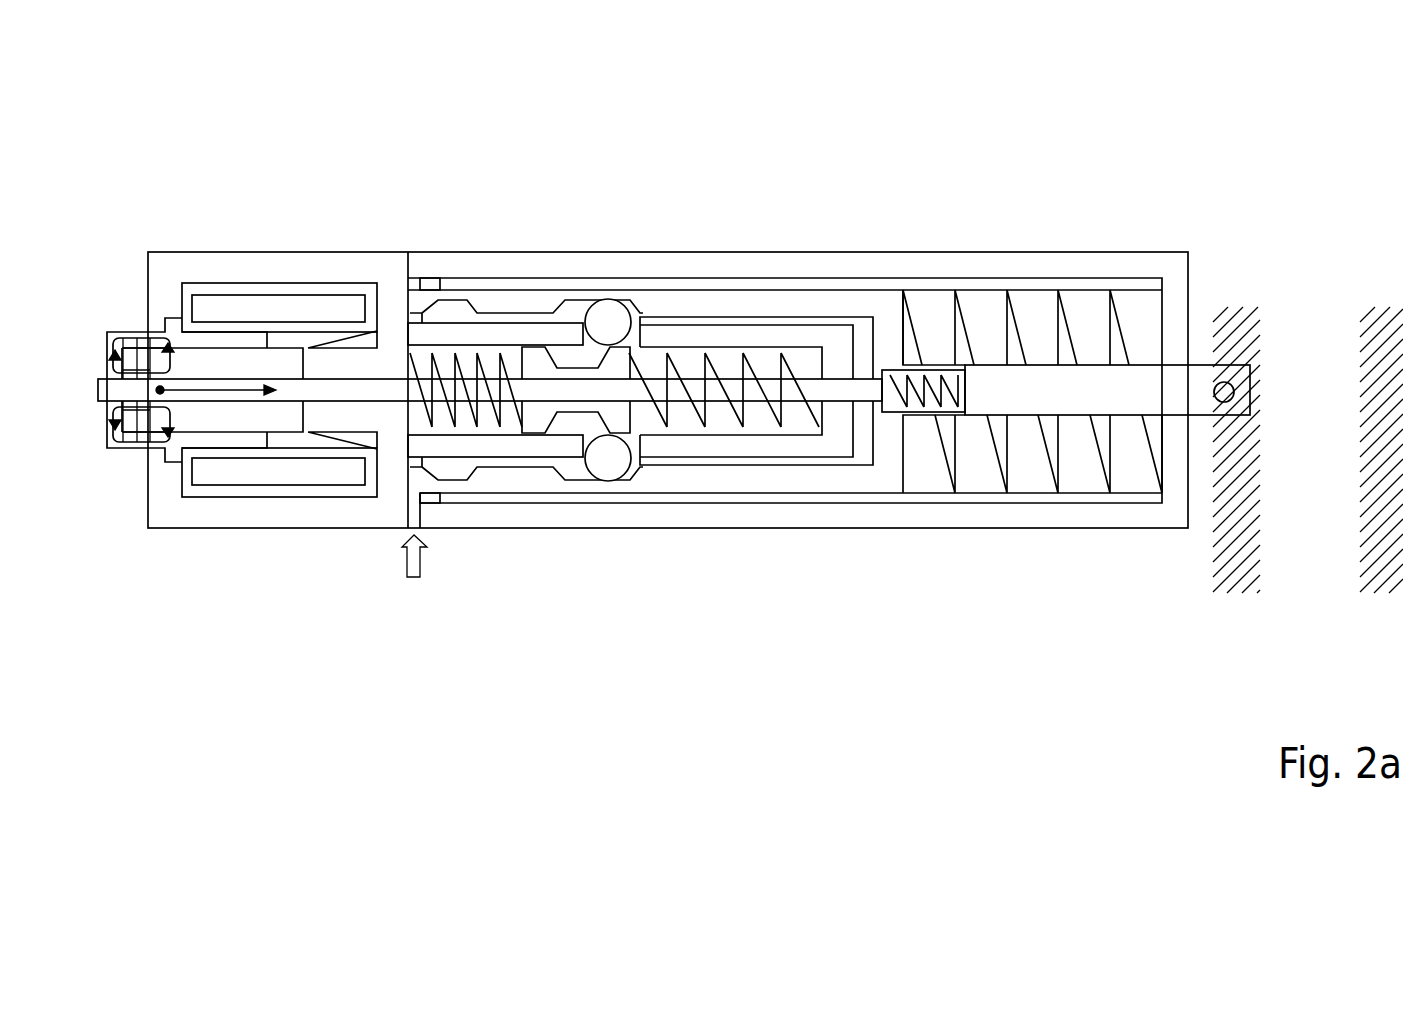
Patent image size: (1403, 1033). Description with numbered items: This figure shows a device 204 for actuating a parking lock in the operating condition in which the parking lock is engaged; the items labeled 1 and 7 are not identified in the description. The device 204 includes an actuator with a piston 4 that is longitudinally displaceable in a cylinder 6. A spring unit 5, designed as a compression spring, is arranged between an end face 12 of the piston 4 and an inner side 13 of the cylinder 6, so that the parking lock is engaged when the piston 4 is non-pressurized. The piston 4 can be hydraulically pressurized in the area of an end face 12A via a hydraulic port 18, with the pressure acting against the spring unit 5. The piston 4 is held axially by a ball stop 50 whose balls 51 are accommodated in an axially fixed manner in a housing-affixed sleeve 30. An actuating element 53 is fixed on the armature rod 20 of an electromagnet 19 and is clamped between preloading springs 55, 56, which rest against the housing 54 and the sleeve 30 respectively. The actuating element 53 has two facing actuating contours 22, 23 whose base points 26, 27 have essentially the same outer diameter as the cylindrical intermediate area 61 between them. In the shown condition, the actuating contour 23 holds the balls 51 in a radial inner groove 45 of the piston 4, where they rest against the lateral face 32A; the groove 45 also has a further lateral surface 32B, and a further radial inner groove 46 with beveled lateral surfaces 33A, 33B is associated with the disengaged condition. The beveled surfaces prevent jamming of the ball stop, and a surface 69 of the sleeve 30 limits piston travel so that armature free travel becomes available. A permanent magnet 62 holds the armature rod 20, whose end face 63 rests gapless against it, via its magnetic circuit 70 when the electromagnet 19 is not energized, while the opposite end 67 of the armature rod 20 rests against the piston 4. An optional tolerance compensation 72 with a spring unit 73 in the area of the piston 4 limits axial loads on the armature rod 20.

The valve 1 is at (807, 214).
The piston 4 is at (887, 307).
The spring unit 5 is at (1067, 325).
The cylinder 6 is at (977, 265).
The actuating rod 7 is at (1200, 383).
The end face 12 is at (910, 475).
The end face 12A is at (407, 302).
The inner side 13 is at (1160, 465).
The hydraulic port 18 is at (413, 512).
The electromagnet 19 is at (258, 283).
The armature rod 20 is at (343, 390).
The actuating contour 22 is at (492, 396).
The actuating contour 23 is at (648, 440).
The base point 26 is at (548, 335).
The base point 27 is at (601, 316).
The sleeve 30 is at (453, 445).
The lateral face 32A is at (616, 356).
The further lateral surface 32B is at (575, 298).
The lateral surface 33A is at (428, 472).
The lateral surface 33B is at (472, 466).
The radial inner groove 45 is at (560, 352).
The further radial inner groove 46 is at (446, 287).
The ball stop 50 is at (618, 462).
The balls 51 is at (606, 419).
The actuating element 53 is at (634, 306).
The housing 54 is at (357, 265).
The preloading spring 55 is at (552, 414).
The preloading spring 56 is at (777, 422).
The cylindrical intermediate area 61 is at (575, 414).
The permanent magnet 62 is at (113, 350).
The end face 63 is at (168, 343).
The end 67 is at (878, 388).
The surface 69 is at (657, 455).
The magnetic circuit 70 is at (137, 446).
The tolerance compensation 72 is at (920, 422).
The spring unit 73 is at (933, 366).
The device 204 is at (1033, 212).